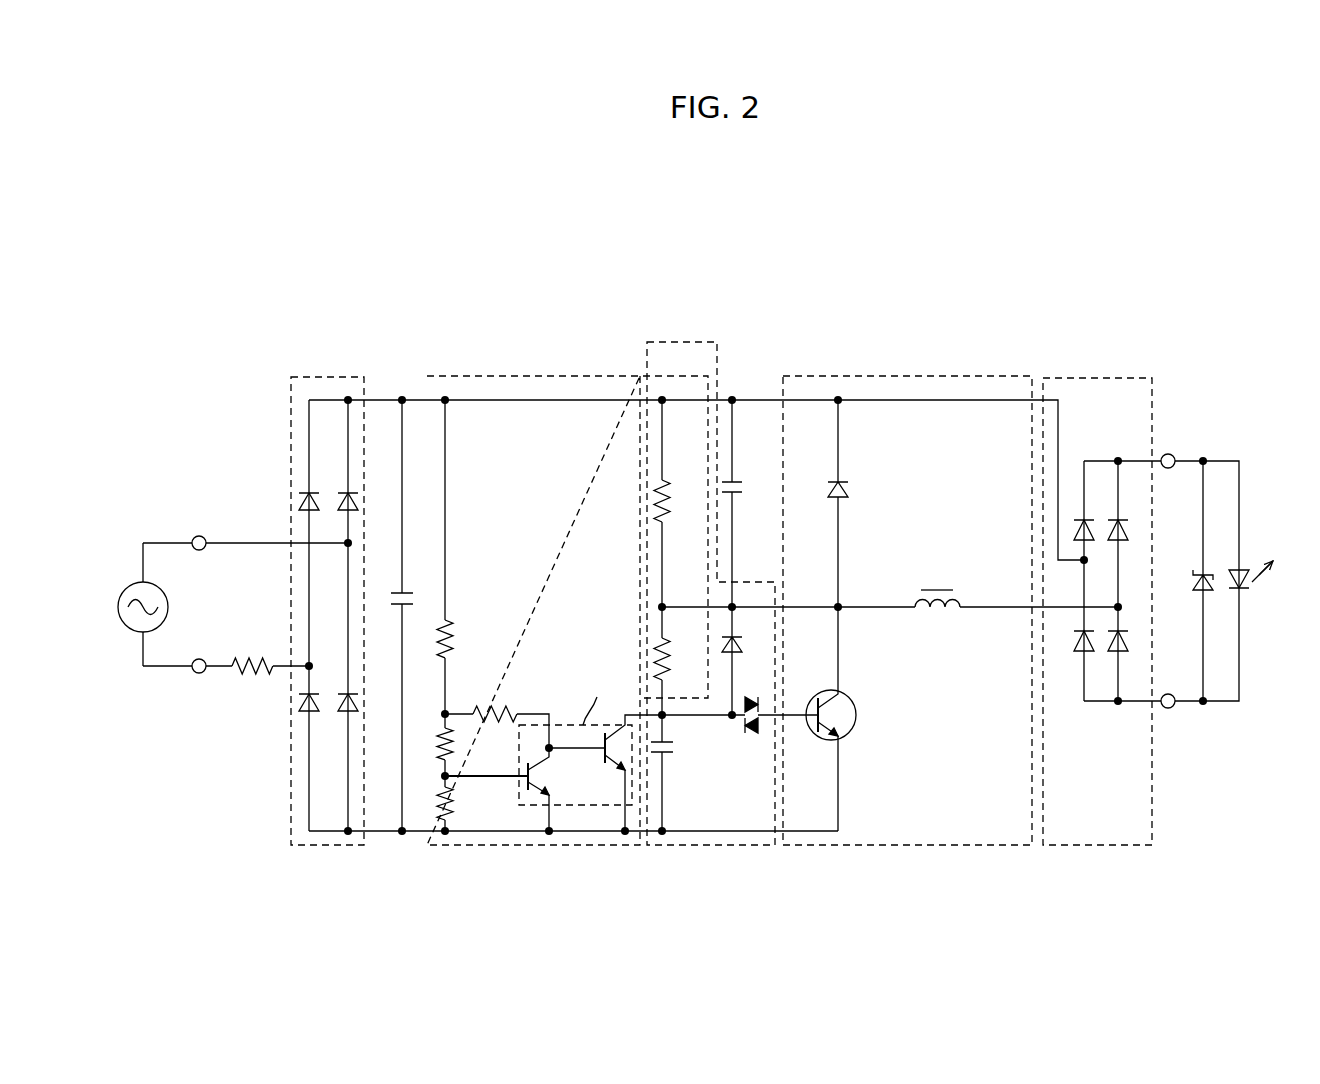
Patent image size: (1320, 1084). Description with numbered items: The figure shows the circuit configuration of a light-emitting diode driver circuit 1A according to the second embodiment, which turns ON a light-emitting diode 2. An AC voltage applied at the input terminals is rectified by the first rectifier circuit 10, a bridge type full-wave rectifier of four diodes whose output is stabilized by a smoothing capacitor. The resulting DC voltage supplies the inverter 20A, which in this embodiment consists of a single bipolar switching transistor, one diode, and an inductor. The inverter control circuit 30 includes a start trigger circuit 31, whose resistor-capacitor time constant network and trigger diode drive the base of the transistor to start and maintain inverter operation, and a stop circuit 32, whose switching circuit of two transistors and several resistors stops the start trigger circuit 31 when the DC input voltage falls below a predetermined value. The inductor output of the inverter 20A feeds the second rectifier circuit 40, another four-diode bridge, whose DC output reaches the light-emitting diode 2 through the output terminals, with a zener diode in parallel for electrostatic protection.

The light-emitting diode driver circuit 1A is at (1222, 282).
The LED 2 is at (1248, 560).
The first rectifier circuit 10 is at (318, 376).
The inverter 20A is at (915, 376).
The inverter control circuit 30 is at (542, 278).
The start trigger circuit 31 is at (678, 342).
The stop circuit 32 is at (559, 376).
The second rectifier circuit 40 is at (1104, 378).